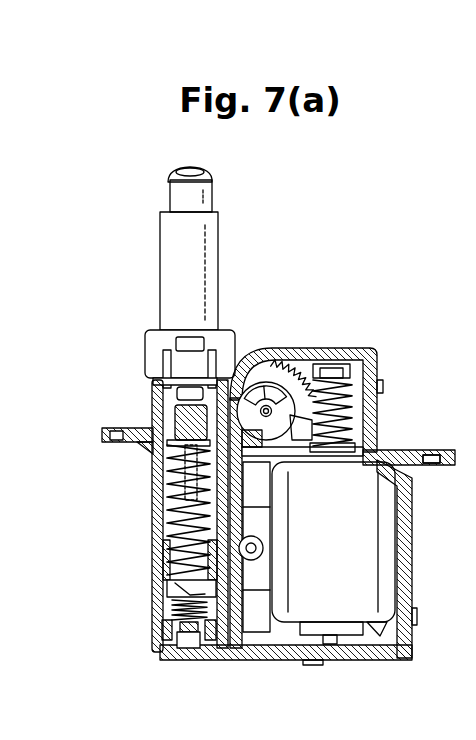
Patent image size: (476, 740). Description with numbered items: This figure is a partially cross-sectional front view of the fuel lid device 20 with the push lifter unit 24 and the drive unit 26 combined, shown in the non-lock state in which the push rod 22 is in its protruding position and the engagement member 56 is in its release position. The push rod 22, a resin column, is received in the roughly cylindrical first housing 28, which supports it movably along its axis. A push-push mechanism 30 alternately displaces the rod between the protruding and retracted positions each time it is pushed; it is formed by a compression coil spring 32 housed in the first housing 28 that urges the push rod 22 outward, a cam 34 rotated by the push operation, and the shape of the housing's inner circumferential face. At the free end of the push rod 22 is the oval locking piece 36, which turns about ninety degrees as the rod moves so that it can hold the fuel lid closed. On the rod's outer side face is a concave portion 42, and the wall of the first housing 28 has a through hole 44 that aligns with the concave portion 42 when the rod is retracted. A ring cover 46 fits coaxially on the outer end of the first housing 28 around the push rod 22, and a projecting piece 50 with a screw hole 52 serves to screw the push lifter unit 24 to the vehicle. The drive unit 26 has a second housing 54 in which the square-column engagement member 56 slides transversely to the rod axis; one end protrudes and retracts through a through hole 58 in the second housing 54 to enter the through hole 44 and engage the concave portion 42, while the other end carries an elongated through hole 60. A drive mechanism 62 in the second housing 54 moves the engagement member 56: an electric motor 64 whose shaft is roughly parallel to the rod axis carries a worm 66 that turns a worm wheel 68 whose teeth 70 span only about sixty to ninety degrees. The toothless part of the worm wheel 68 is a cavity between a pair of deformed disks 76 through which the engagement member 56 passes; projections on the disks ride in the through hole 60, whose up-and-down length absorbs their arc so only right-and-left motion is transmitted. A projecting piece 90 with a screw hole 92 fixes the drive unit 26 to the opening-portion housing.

The fuel lid device 20 is at (362, 172).
The push rod 22 is at (168, 242).
The push lifter unit 24 is at (232, 238).
The drive unit 26 is at (330, 258).
The first housing 28 is at (152, 533).
The push-push mechanism 30 is at (162, 627).
The compression coil spring 32 is at (170, 502).
The cam 34 is at (168, 583).
The locking piece 36 is at (172, 175).
The concave portion 42 is at (172, 418).
The through hole 44 is at (170, 456).
The ring cover 46 is at (148, 340).
The projecting piece 50 is at (115, 441).
The screw hole 52 is at (120, 430).
The second housing 54 is at (412, 578).
The engagement member 56 is at (258, 448).
The through hole 58 is at (252, 561).
The through hole 60 is at (292, 432).
The drive mechanism 62 is at (382, 638).
The electric motor 64 is at (358, 636).
The worm 66 is at (353, 388).
The worm wheel 68 is at (259, 372).
The teeth 70 is at (296, 354).
The deformed disks 76 is at (255, 362).
The projecting piece 90 is at (448, 452).
The screw hole 92 is at (430, 464).